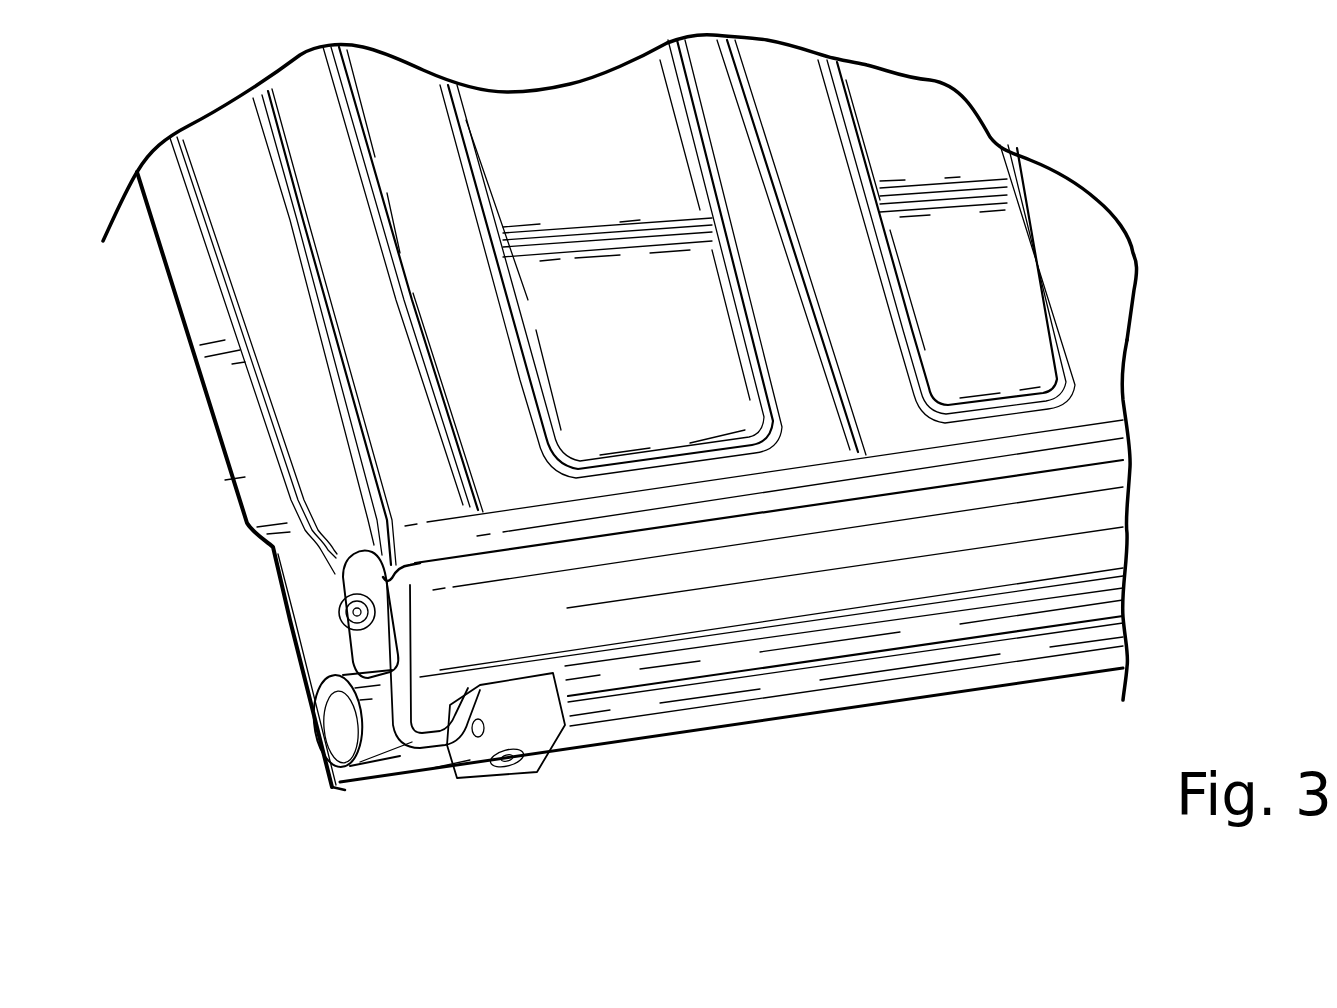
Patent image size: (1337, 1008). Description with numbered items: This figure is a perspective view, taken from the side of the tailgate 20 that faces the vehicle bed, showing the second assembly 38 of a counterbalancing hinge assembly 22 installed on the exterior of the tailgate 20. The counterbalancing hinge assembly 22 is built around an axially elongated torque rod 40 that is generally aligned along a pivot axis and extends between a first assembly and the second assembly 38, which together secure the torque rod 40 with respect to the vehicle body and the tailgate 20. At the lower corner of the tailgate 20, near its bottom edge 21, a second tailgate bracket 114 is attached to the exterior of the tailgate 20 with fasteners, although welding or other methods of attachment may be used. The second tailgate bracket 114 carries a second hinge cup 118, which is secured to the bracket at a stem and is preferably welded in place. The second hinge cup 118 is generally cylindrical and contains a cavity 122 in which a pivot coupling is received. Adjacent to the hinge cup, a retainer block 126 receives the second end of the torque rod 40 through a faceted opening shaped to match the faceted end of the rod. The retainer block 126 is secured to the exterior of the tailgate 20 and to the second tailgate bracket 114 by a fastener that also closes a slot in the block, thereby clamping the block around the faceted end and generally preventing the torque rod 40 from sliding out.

The tailgate 20 is at (333, 257).
The bottom edge 21 is at (653, 667).
The counterbalancing hinge assembly 22 is at (782, 797).
The second assembly 38 is at (414, 822).
The torque rod 40 is at (835, 672).
The second tailgate bracket 114 is at (358, 650).
The second hinge cup 118 is at (368, 757).
The cavity 122 is at (335, 727).
The retainer block 126 is at (540, 713).